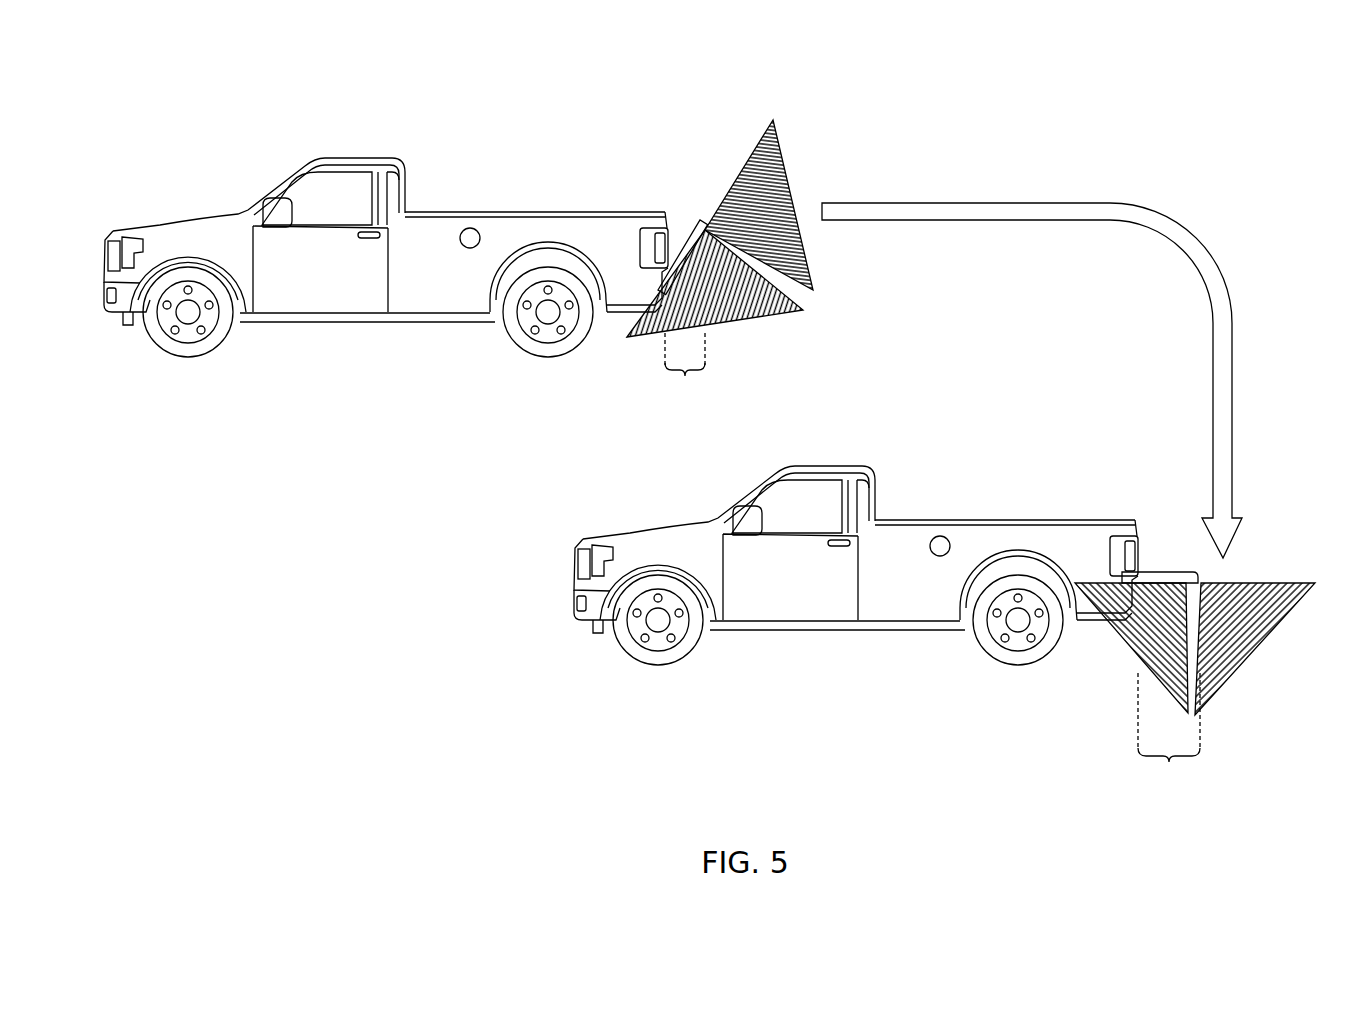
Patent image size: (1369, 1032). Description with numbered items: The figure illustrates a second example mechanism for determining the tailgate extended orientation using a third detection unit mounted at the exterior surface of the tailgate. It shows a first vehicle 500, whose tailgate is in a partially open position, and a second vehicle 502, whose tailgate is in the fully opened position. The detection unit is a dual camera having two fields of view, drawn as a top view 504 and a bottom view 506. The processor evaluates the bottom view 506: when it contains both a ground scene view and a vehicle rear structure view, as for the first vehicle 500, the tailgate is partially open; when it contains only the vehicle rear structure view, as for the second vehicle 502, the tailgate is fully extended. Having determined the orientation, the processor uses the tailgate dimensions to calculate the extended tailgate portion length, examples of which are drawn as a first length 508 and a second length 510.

The first vehicle 500 is at (352, 156).
The second vehicle 502 is at (828, 463).
The top view 504 is at (778, 158).
The bottom view 506 is at (753, 307).
The first length 508 is at (685, 370).
The second length 510 is at (1169, 734).